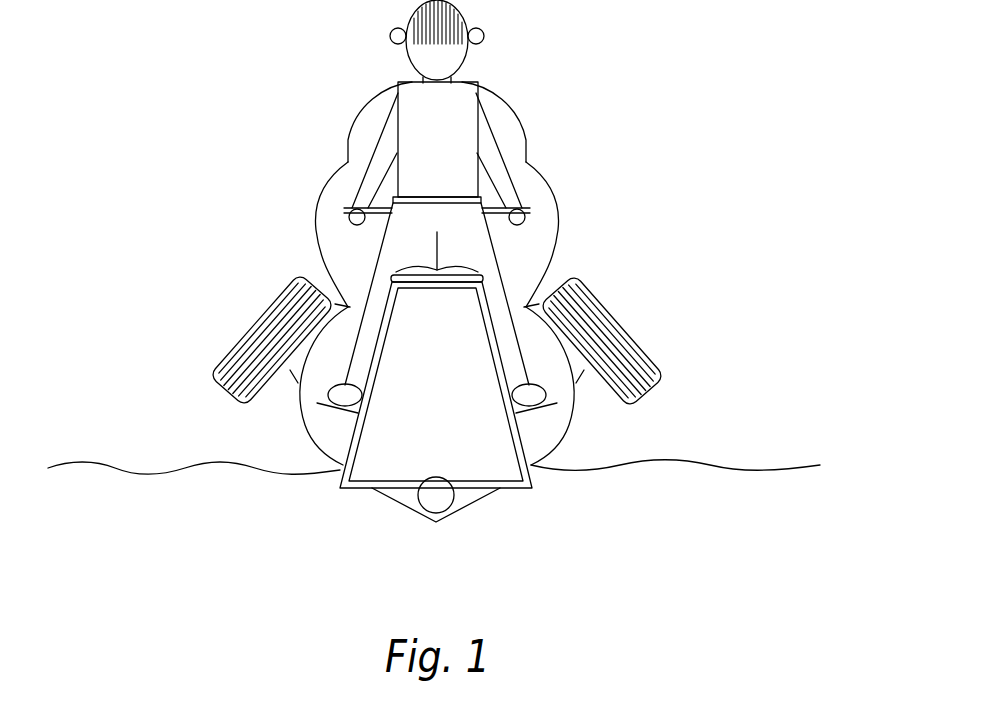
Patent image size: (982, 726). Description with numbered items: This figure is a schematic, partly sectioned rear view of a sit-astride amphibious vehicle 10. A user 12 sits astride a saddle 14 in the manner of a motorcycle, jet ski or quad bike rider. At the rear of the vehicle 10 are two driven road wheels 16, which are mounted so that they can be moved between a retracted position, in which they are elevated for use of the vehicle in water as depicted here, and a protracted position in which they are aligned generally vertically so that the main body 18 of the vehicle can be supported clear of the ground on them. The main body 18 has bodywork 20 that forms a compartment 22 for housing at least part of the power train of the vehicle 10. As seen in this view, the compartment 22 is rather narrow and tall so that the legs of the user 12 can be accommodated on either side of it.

The amphibious vehicle 10 is at (250, 120).
The user 12 is at (455, 110).
The saddle 14 is at (462, 278).
The driven road wheels 16 is at (240, 333).
The main body 18 is at (529, 433).
The bodywork 20 is at (535, 486).
The compartment 22 is at (359, 438).